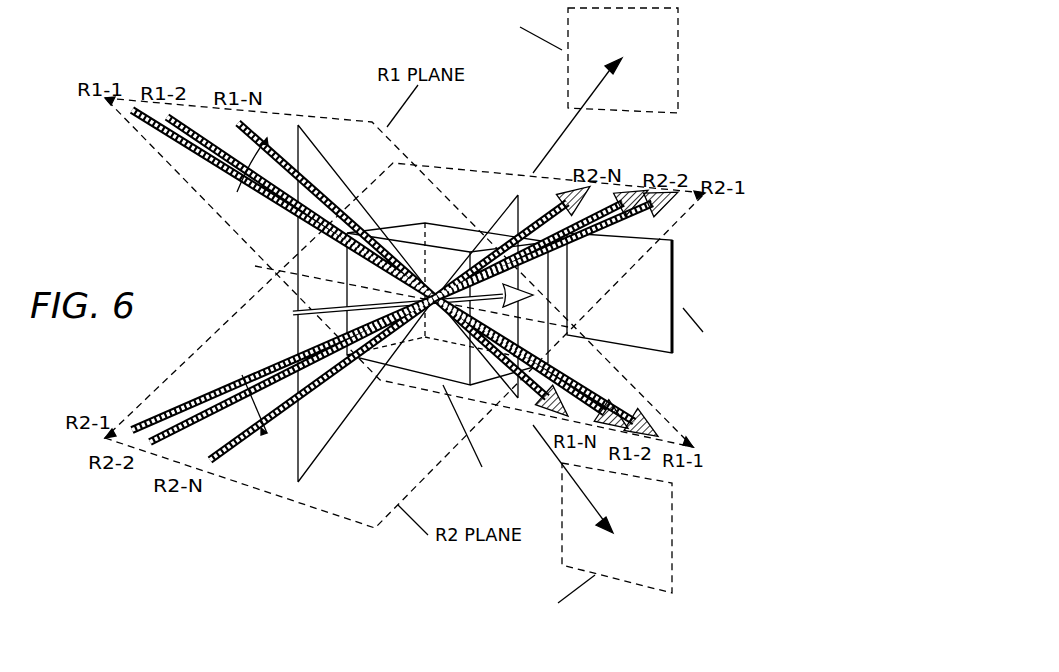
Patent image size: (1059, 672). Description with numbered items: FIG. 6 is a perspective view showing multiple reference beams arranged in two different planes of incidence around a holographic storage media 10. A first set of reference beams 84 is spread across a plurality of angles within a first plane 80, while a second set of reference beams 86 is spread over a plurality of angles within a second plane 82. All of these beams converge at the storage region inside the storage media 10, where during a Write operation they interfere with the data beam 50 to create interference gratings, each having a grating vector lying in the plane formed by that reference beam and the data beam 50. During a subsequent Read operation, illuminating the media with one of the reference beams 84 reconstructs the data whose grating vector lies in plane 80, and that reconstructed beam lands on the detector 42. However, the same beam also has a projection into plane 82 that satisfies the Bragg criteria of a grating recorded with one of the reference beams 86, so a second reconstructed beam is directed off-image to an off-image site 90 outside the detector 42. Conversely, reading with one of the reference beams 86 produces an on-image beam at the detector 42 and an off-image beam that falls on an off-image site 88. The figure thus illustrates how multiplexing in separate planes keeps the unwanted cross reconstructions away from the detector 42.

The storage media 10 is at (408, 231).
The detector 42 is at (663, 270).
The data beam 50 is at (318, 313).
The plane 80 is at (332, 127).
The plane 82 is at (332, 507).
The reference beams 84 is at (237, 192).
The reference beams 86 is at (242, 375).
The off-image site 88 is at (667, 37).
The off-image site 90 is at (650, 582).